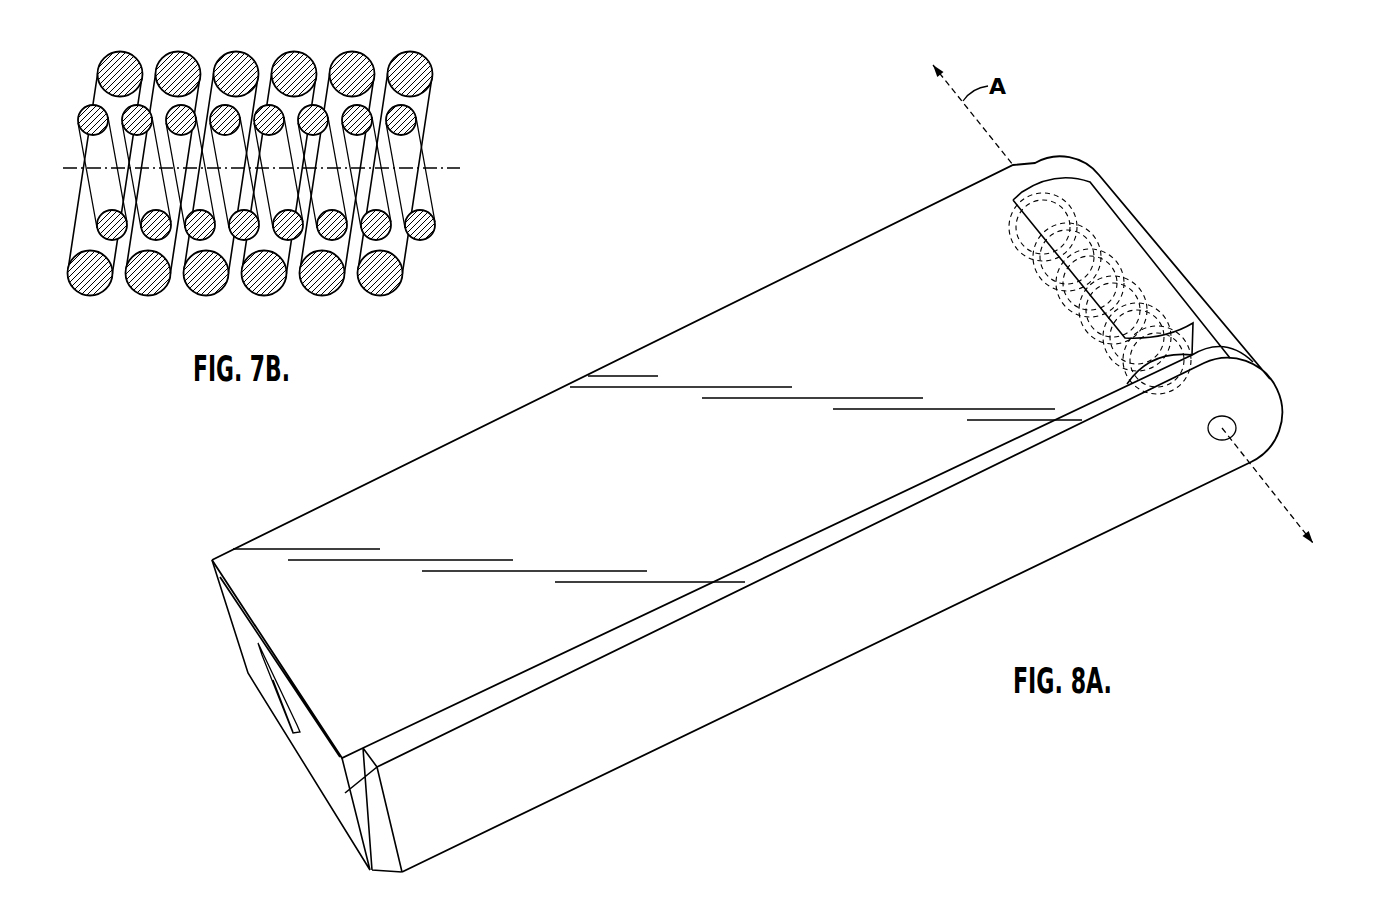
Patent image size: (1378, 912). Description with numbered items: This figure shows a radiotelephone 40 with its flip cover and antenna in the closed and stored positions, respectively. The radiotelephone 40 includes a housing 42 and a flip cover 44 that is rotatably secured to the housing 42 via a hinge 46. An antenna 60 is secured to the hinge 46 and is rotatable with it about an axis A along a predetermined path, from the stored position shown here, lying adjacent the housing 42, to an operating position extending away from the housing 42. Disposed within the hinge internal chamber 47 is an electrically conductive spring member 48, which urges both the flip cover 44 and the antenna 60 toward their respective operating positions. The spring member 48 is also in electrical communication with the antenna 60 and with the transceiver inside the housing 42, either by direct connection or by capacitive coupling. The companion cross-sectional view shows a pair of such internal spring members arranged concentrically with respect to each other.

The radiotelephone 40 is at (834, 222).
The housing 42 is at (238, 628).
The flip cover 44 is at (510, 456).
The hinge 46 is at (1105, 223).
The hinge internal chamber 47 is at (1058, 213).
The spring member 48 is at (1148, 273).
The antenna 60 is at (1058, 530).